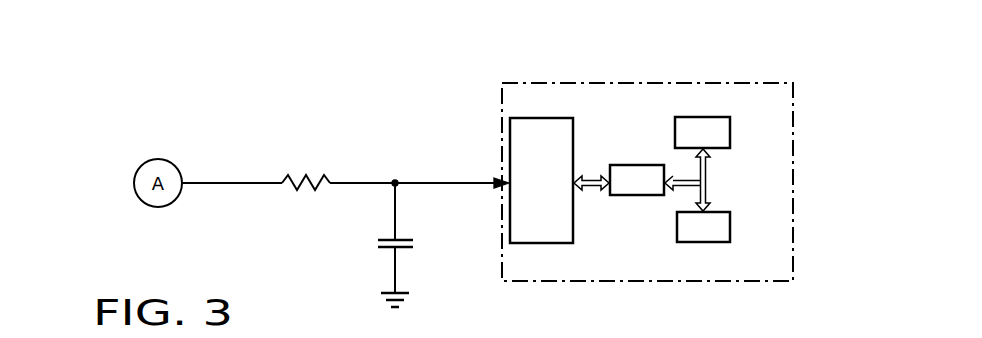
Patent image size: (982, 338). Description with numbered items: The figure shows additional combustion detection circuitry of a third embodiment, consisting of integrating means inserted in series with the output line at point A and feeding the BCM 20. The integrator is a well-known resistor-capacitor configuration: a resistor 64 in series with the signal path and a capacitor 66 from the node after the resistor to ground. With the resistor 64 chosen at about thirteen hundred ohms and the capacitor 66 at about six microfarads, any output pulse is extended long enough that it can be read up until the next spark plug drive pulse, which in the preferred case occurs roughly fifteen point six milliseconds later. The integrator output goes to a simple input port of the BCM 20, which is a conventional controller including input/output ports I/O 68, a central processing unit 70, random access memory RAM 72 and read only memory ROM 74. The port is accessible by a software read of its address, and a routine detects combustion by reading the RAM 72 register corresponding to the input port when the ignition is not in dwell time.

The BCM 20 is at (652, 70).
The resistor 64 is at (302, 178).
The capacitor 66 is at (385, 240).
The input/output ports I/O 68 is at (545, 132).
The central processing unit 70 is at (641, 163).
The random access memory RAM 72 is at (703, 117).
The read only memory ROM 74 is at (705, 243).